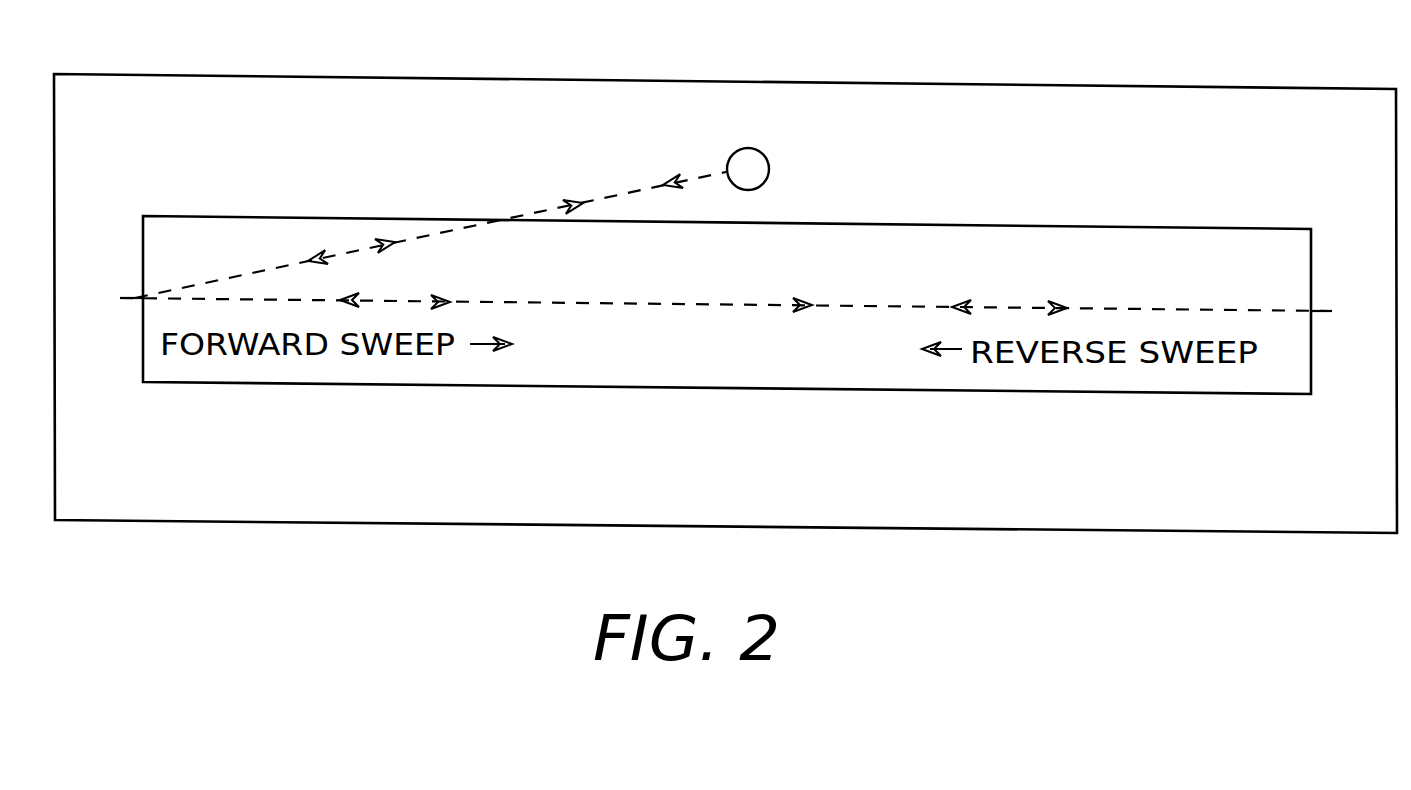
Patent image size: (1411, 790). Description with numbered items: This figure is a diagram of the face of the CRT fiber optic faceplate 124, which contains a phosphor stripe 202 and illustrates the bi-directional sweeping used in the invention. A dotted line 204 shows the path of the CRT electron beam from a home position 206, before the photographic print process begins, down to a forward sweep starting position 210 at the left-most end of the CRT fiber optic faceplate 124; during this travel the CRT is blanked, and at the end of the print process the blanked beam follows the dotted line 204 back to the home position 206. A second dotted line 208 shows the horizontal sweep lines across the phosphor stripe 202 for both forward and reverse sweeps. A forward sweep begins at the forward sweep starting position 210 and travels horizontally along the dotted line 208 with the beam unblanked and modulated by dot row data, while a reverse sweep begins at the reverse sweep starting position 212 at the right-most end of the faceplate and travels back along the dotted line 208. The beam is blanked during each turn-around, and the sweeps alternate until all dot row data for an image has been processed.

The CRT fiber optic faceplate 124 is at (1073, 85).
The phosphor stripe 202 is at (1110, 227).
The dotted line 204 is at (614, 192).
The home position 206 is at (728, 159).
The dotted line 208 is at (868, 307).
The forward sweep starting position 210 is at (120, 298).
The reverse sweep starting position 212 is at (1377, 280).